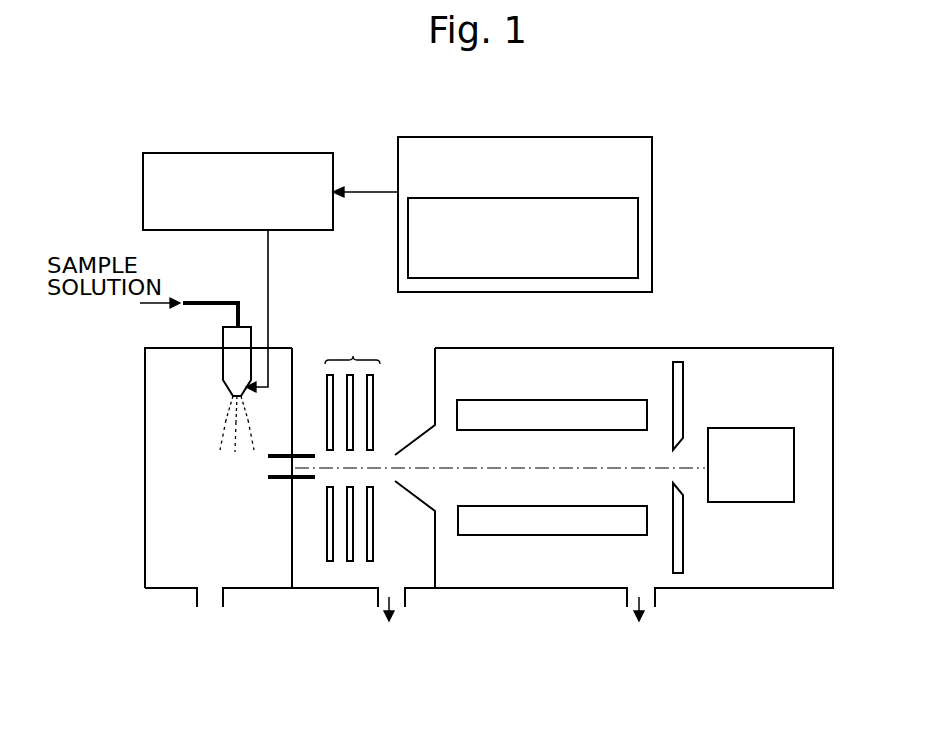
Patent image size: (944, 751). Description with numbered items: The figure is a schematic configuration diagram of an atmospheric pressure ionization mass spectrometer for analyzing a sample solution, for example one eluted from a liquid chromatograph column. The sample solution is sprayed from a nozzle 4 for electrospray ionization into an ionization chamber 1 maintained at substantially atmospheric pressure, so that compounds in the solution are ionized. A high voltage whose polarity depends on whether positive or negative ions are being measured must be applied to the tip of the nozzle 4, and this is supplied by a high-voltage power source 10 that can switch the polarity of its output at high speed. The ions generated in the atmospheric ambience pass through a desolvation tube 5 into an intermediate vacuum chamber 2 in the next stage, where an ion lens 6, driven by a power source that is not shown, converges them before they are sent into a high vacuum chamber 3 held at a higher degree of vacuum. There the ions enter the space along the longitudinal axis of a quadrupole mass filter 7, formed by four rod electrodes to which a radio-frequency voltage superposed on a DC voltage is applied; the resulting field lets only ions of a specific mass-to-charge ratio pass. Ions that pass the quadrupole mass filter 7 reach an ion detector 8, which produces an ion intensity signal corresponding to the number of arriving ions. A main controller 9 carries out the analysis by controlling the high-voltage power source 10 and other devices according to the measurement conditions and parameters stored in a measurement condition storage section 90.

The ionization chamber 1 is at (175, 578).
The intermediate vacuum chamber 2 is at (315, 578).
The high vacuum chamber 3 is at (536, 578).
The nozzle 4 is at (222, 335).
The desolvation tube 5 is at (278, 481).
The ion lens 6 is at (355, 354).
The quadrupole mass filter 7 is at (565, 400).
The ion detector 8 is at (755, 428).
The main controller 9 is at (551, 137).
The high-voltage power source 10 is at (283, 152).
The measurement condition storage section 90 is at (638, 214).